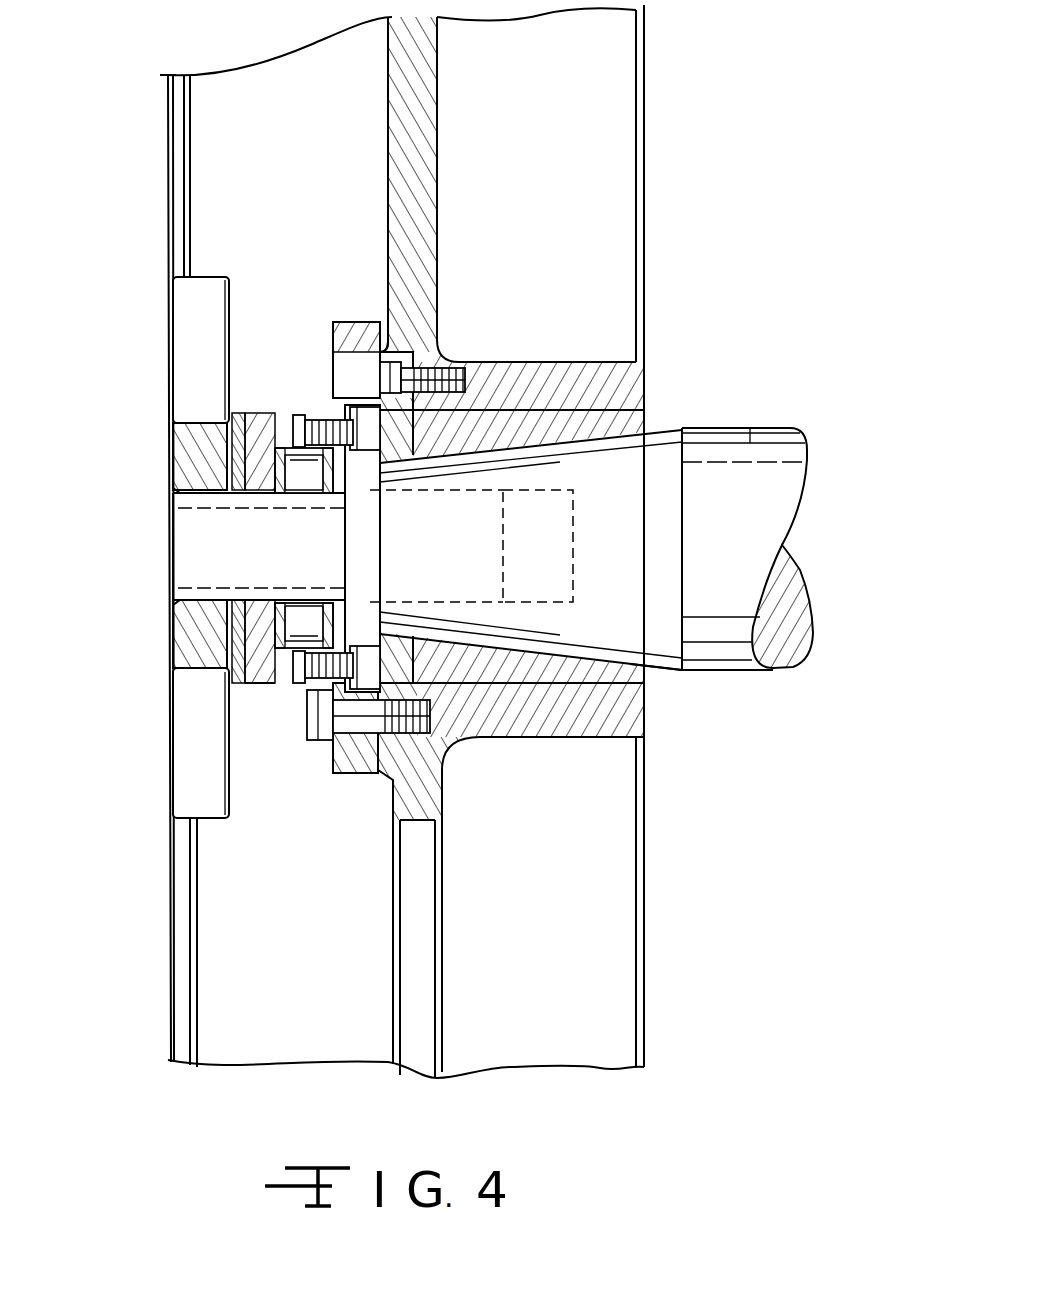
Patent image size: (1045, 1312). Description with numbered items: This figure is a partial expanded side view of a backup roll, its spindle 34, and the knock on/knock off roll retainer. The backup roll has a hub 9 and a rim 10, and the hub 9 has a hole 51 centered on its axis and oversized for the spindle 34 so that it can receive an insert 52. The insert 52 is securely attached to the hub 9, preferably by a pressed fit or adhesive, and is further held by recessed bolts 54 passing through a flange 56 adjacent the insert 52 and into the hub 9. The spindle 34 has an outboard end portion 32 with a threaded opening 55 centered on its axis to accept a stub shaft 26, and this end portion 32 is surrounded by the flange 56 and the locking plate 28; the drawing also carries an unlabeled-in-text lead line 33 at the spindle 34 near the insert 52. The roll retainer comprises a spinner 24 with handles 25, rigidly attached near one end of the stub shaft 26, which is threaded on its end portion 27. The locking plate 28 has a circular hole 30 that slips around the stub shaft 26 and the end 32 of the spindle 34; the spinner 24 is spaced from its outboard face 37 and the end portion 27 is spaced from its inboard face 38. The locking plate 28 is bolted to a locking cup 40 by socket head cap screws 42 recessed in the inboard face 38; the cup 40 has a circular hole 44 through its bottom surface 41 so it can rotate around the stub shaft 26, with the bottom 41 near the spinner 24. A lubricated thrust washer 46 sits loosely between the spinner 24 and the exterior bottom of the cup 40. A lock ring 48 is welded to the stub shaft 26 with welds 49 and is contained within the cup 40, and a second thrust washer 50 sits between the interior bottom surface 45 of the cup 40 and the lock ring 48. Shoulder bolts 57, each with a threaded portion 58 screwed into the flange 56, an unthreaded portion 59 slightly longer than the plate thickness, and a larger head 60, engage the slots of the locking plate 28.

The hub 9 is at (490, 385).
The rim 10 is at (590, 55).
The spinner 24 is at (193, 450).
The handle 25 is at (188, 310).
The stub shaft 26 is at (192, 537).
The end portion 27 is at (467, 517).
The locking plate 28 is at (386, 336).
The circular hole 30 is at (362, 524).
The end of the spindle 32 is at (387, 553).
The nozzle lower edge 33 is at (655, 663).
The spindle 34 is at (750, 428).
The outboard face 37 is at (327, 345).
The inboard face 38 is at (382, 345).
The locking cup 40 is at (260, 417).
The bottom surface 41 is at (247, 412).
The socket head cap screws 42 is at (333, 400).
The circular hole 44 is at (250, 613).
The interior bottom surface 45 is at (178, 503).
The thrust washer 46 is at (257, 613).
The lock ring 48 is at (307, 423).
The welds 49 is at (303, 625).
The thrust washer 50 is at (262, 645).
The hole 51 is at (537, 365).
The insert 52 is at (573, 413).
The recessed bolts 54 is at (380, 357).
The threaded opening 55 is at (528, 492).
The flange 56 is at (390, 743).
The shoulder bolts 57 is at (297, 737).
The threaded portion 58 is at (463, 717).
The unthreaded portion 59 is at (342, 718).
The head 60 is at (313, 742).